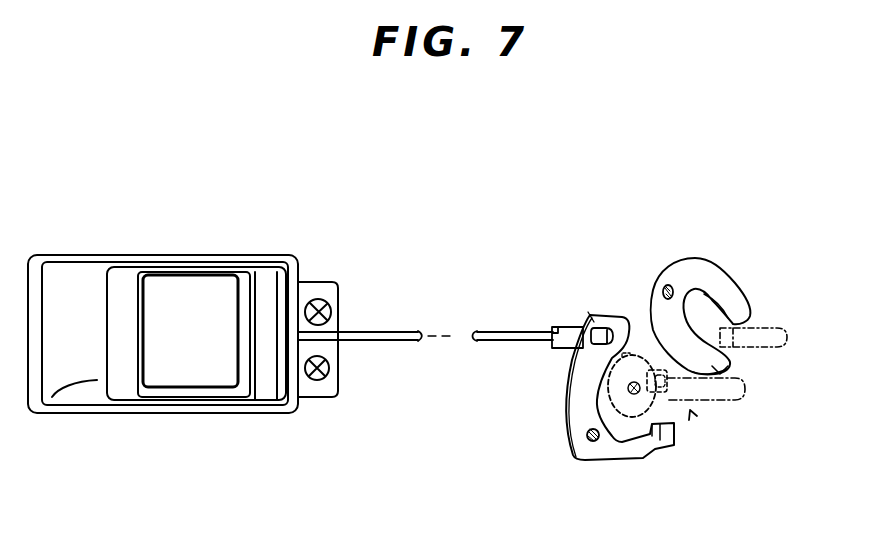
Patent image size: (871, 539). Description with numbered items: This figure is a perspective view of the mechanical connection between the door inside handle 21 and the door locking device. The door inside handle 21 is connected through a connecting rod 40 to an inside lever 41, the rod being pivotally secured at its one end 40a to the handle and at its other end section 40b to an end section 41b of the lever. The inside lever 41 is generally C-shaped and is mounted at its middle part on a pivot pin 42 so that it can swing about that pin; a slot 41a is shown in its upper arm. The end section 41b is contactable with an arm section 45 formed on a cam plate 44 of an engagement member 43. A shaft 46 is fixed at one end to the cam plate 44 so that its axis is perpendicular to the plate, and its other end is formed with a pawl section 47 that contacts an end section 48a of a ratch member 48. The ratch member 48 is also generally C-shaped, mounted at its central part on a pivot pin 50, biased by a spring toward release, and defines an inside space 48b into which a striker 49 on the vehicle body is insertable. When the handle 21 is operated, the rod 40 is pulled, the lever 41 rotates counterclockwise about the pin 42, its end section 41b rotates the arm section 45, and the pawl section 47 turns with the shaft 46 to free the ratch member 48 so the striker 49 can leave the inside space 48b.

The door inside handle 21 is at (157, 398).
The connecting rod 40 is at (485, 328).
The one end of connecting rod 40a is at (328, 398).
The other end section of connecting rod 40b is at (570, 327).
The inside lever 41 is at (568, 388).
The lever slot 41a is at (620, 320).
The end section of inside lever 41b is at (676, 446).
The pivot pin 42 is at (589, 441).
The engagement member 43 is at (690, 410).
The cam plate 44 is at (638, 360).
The arm section 45 is at (668, 388).
The shaft 46 is at (723, 400).
The pawl section 47 is at (720, 372).
The ratch member 48 is at (697, 277).
The end section of ratch member 48a is at (730, 362).
The inside space of ratch member 48b is at (710, 313).
The striker 49 is at (785, 328).
The pivot pin 50 is at (668, 287).